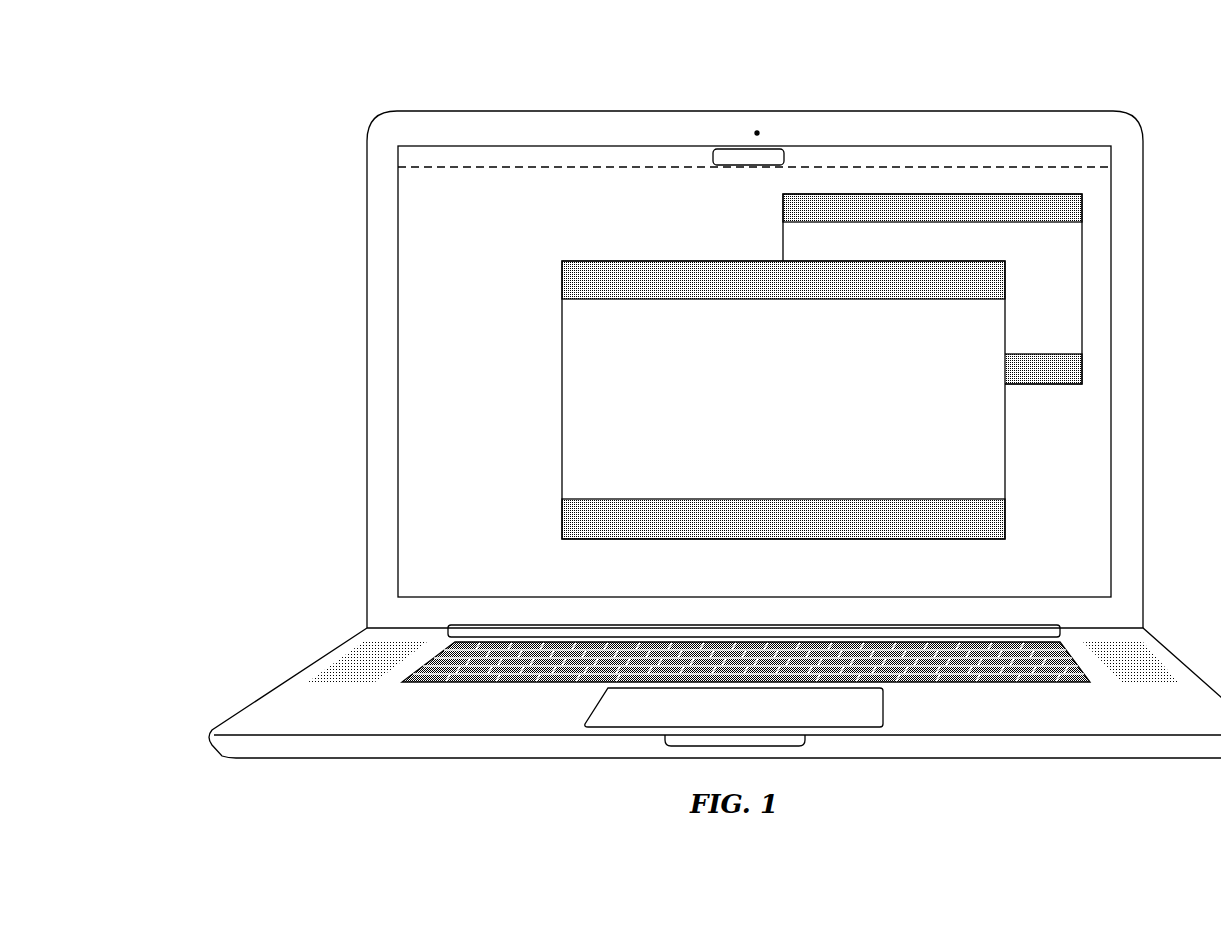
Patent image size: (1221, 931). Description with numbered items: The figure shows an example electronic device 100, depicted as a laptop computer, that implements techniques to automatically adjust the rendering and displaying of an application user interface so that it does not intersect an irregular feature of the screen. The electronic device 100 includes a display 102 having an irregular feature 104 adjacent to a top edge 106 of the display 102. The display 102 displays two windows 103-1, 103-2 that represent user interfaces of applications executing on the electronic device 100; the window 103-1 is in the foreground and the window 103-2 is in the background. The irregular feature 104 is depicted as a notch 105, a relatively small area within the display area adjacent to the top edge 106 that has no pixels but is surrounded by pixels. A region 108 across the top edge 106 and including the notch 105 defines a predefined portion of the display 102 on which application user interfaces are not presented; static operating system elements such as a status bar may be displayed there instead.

The electronic device 100 is at (1155, 660).
The display 102 is at (407, 528).
The window 103-1 is at (1007, 437).
The window 103-2 is at (1084, 247).
The irregular feature 104 is at (786, 152).
The notch 105 is at (712, 155).
The top edge 106 is at (452, 129).
The region 108 is at (980, 152).